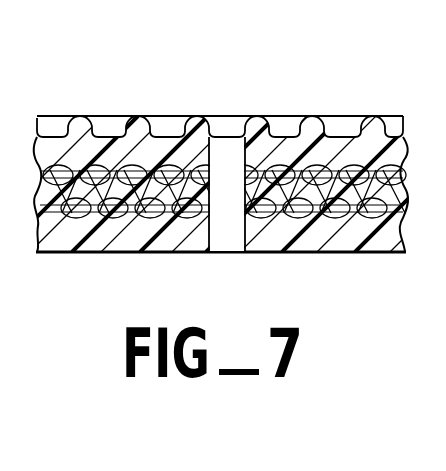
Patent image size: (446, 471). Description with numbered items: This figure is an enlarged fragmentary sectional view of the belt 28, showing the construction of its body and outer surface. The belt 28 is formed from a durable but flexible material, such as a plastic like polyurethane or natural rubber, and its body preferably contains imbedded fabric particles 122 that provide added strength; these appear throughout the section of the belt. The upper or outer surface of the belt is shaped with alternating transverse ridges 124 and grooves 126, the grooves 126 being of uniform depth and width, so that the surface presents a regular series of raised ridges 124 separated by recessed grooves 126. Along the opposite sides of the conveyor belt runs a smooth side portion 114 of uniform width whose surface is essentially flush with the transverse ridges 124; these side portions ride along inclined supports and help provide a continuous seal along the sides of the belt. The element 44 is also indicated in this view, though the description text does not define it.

The belt 28 is at (180, 100).
The top surface plate 44 is at (288, 116).
The smooth side portion 114 is at (58, 116).
The imbedded fabric particles 122 is at (130, 200).
The transverse ridges 124 is at (91, 111).
The grooves 126 is at (230, 134).